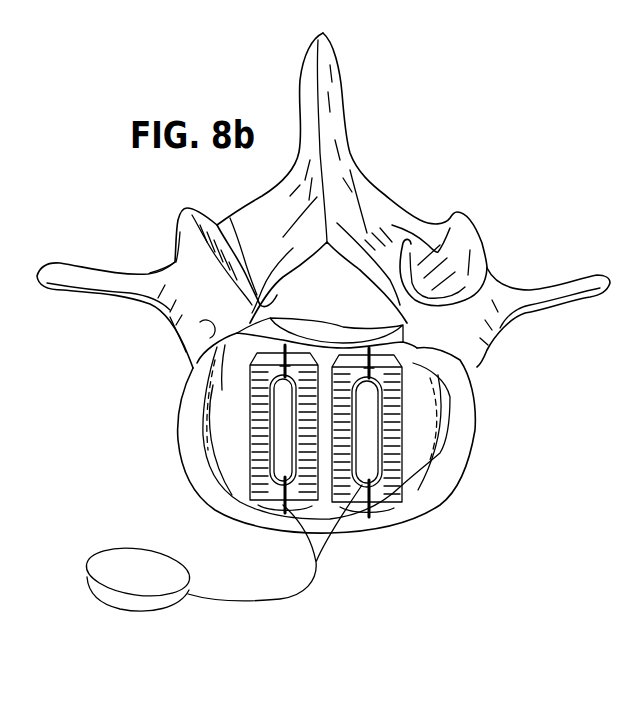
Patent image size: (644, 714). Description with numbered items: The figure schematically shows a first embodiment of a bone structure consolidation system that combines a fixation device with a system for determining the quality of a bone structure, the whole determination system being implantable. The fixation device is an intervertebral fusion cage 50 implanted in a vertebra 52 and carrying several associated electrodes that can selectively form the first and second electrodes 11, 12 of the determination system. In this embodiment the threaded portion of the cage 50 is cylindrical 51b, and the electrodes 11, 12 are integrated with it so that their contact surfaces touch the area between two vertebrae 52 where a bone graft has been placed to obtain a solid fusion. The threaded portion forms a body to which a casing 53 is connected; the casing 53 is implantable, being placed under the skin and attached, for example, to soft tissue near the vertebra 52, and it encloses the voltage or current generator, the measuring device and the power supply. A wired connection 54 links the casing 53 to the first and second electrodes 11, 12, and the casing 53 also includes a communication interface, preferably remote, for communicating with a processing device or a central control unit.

The first electrode 11 is at (285, 350).
The second electrode 12 is at (328, 403).
The intervertebral fusion cage 50 is at (328, 403).
The cylindrical threaded portion 51b is at (255, 468).
The vertebra 52 is at (375, 215).
The casing 53 is at (133, 600).
The wired connection 54 is at (232, 601).